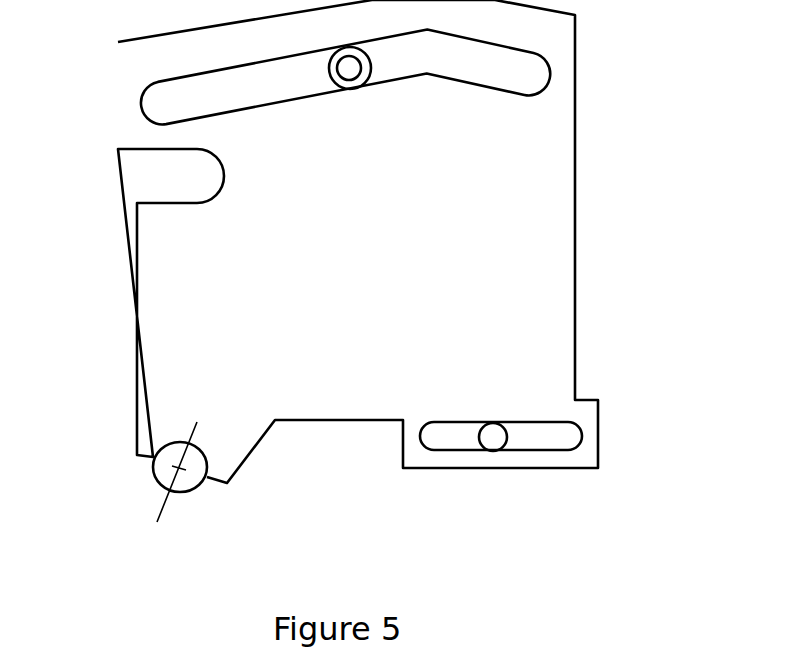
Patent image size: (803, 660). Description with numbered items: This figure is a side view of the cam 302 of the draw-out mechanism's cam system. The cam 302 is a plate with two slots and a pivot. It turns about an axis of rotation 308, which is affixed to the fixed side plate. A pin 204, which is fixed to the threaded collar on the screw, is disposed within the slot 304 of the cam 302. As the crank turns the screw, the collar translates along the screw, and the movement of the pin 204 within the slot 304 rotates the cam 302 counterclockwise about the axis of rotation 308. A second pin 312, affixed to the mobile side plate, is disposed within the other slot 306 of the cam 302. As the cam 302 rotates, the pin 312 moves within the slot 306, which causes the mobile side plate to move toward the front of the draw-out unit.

The cam 302 is at (575, 178).
The slot 306 is at (293, 105).
The pin 312 is at (362, 68).
The slot 304 is at (525, 450).
The pin 204 is at (477, 422).
The axis of rotation 308 is at (153, 477).